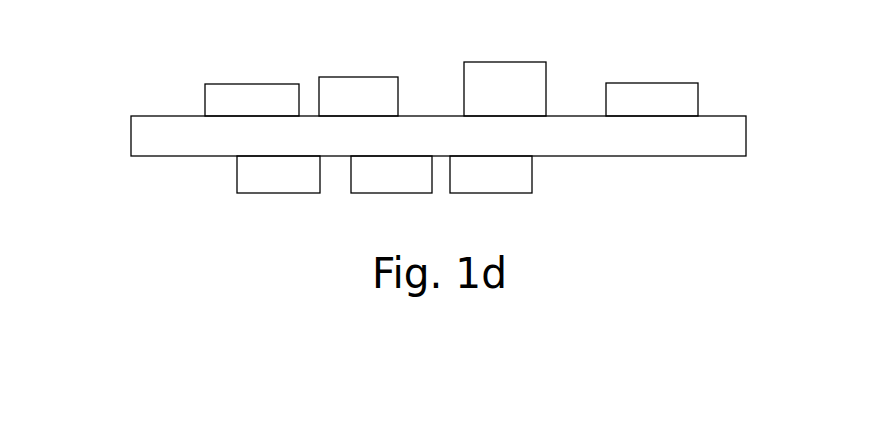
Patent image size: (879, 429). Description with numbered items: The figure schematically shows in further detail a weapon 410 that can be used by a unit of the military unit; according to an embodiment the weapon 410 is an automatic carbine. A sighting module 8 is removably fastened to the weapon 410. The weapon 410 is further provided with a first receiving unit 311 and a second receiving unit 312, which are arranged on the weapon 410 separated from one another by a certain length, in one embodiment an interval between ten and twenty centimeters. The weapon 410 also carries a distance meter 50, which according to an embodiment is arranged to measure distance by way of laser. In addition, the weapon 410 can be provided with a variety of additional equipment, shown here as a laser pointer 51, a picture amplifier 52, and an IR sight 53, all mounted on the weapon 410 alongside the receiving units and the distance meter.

The weapon 410 is at (184, 167).
The first receiving unit 311 is at (232, 111).
The distance meter 50 is at (345, 110).
The sighting module 8 is at (498, 100).
The second receiving unit 312 is at (632, 114).
The laser pointer 51 is at (265, 184).
The picture amplifier 52 is at (377, 184).
The IR sight 53 is at (477, 184).